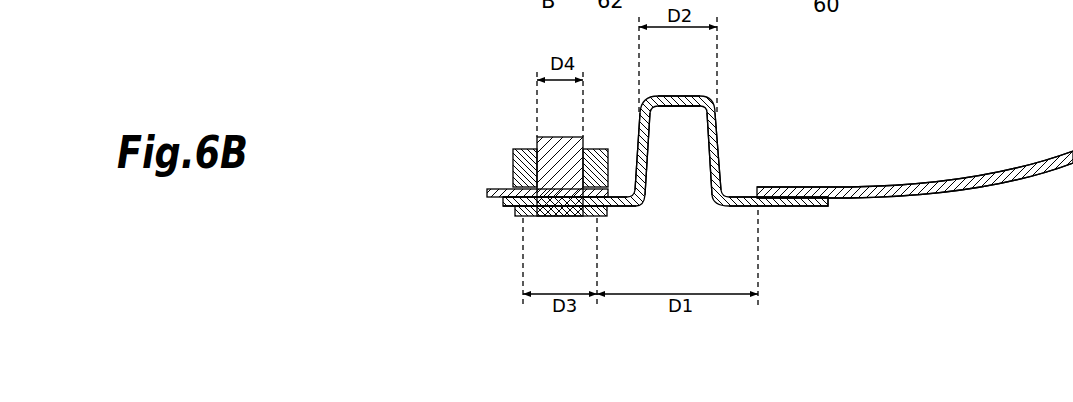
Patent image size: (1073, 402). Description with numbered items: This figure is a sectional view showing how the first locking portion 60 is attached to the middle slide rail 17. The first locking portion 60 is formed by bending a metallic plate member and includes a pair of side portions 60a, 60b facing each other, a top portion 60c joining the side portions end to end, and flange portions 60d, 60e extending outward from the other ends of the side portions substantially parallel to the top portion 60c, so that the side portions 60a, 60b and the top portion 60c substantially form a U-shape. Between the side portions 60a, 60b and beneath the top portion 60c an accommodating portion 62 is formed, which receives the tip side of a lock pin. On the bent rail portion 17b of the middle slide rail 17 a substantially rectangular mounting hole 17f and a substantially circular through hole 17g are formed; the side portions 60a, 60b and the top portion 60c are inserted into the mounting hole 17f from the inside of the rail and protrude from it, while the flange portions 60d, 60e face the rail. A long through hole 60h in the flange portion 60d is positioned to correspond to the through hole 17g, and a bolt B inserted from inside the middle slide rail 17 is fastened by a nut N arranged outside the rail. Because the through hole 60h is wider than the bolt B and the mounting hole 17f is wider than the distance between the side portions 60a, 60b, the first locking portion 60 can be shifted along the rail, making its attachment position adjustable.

The middle slide rail 17 is at (998, 168).
The bent rail portion 17b is at (902, 185).
The mounting hole 17f is at (747, 184).
The through hole 17g is at (536, 184).
The first locking portion 60 is at (728, 102).
The side portion 60a is at (633, 133).
The side portion 60b is at (718, 148).
The top portion 60c is at (667, 97).
The flange portion 60d is at (500, 206).
The flange portion 60e is at (797, 206).
The through hole 60h is at (532, 212).
The accommodating portion 62 is at (672, 168).
The bolt B is at (553, 220).
The nut N is at (523, 150).